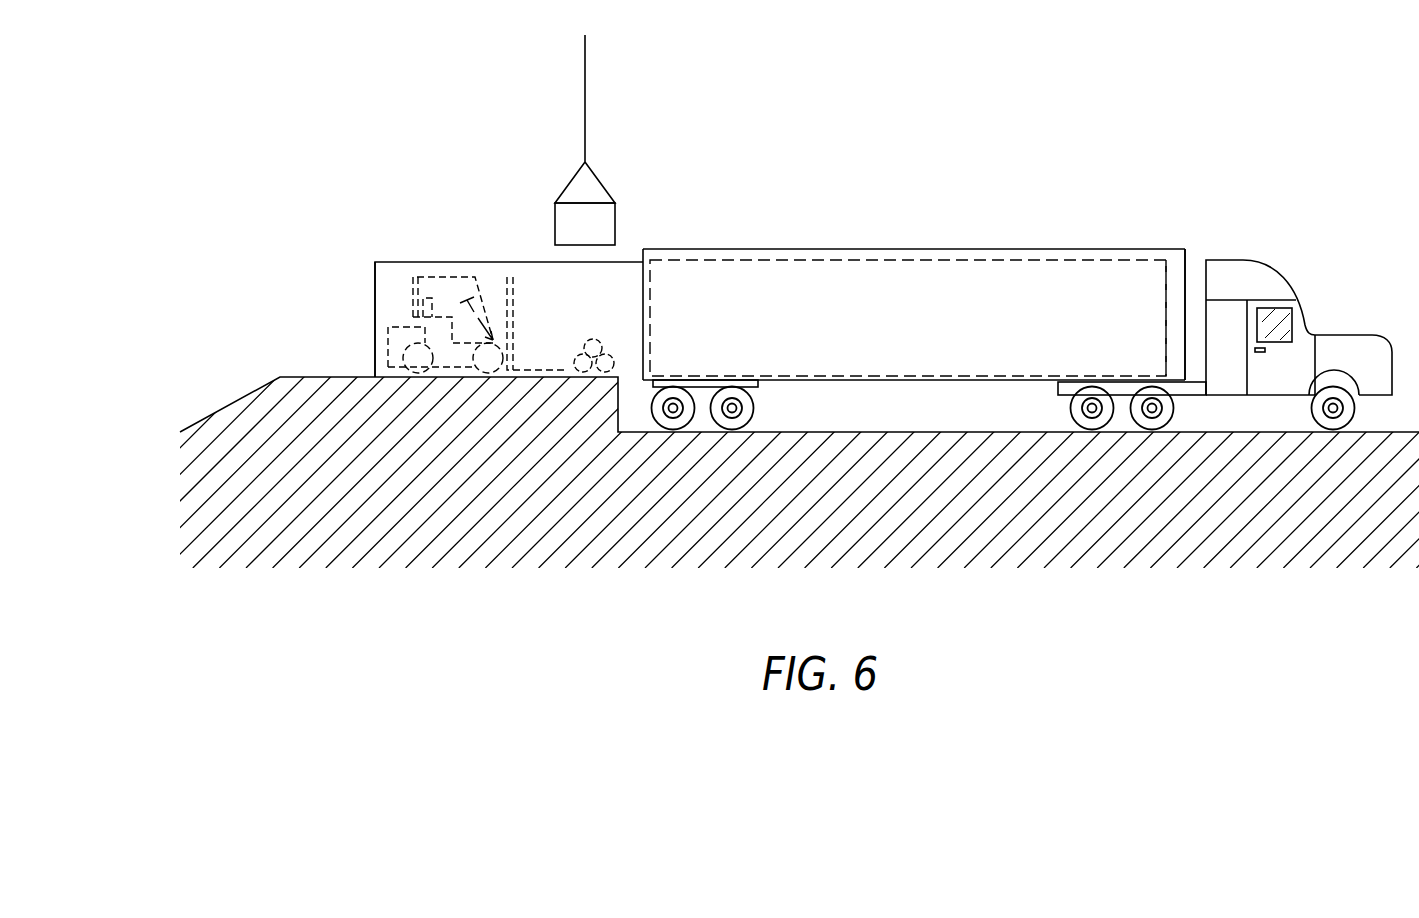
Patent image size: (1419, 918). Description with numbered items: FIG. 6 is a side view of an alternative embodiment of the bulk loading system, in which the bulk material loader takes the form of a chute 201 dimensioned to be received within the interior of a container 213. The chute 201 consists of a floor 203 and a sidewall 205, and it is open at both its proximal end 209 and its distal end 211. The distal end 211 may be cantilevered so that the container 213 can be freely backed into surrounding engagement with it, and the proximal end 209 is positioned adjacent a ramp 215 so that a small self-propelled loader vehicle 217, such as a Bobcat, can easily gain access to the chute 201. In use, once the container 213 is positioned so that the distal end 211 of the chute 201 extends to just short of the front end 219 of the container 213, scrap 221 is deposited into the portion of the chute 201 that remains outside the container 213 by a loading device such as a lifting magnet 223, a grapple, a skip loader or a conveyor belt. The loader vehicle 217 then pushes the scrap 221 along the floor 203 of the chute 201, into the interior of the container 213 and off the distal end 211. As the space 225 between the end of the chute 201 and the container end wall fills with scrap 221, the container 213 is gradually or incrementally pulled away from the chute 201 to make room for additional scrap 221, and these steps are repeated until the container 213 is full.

The chute 201 is at (845, 298).
The floor 203 is at (830, 377).
The sidewall 205 is at (391, 280).
The proximal end 209 is at (375, 320).
The distal end 211 is at (1166, 303).
The container 213 is at (745, 250).
The ramp 215 is at (229, 405).
The loader vehicle 217 is at (428, 275).
The front end 219 is at (1185, 322).
The scrap 221 is at (593, 340).
The lifting magnet 223 is at (555, 210).
The space 225 is at (1118, 362).